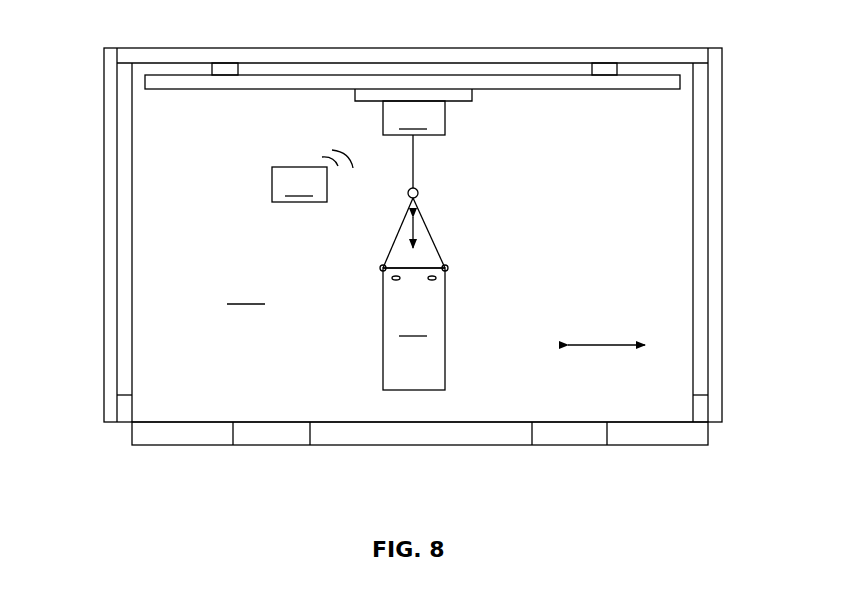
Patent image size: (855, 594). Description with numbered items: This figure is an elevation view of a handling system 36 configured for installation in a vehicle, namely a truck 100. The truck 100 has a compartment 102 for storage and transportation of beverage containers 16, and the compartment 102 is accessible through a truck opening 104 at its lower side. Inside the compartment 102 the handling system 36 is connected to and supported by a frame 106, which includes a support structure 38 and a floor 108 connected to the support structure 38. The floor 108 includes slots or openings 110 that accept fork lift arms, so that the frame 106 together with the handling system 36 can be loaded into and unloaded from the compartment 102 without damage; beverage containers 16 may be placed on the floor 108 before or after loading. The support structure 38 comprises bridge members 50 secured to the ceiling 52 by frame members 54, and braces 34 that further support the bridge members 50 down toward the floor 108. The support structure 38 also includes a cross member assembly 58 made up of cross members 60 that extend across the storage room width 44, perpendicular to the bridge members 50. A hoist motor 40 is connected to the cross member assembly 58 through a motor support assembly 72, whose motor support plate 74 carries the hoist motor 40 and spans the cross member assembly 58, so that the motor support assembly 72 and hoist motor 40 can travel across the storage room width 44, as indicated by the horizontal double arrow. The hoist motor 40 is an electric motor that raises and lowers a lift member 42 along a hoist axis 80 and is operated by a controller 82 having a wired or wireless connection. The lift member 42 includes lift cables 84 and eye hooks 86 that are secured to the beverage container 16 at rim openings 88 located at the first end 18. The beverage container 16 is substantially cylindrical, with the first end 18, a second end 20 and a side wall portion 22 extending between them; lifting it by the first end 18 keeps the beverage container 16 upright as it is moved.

The beverage container 16 is at (414, 329).
The first end 18 is at (445, 266).
The second end 20 is at (440, 392).
The side wall portion 22 is at (445, 354).
The brace 34 is at (693, 207).
The handling system 36 is at (508, 195).
The support structure 38 is at (537, 90).
The hoist motor 40 is at (414, 118).
The lift member 42 is at (416, 172).
The storage room width 44 is at (592, 343).
The bridge member 50 is at (222, 68).
The ceiling 52 is at (300, 47).
The frame member 54 is at (390, 62).
The cross member assembly 58 is at (162, 73).
The cross member 60 is at (607, 84).
The motor support assembly 72 is at (435, 115).
The motor support plate 74 is at (475, 98).
The hoist axis 80 is at (419, 228).
The controller 82 is at (312, 176).
The lift cable 84 is at (409, 166).
The eye hook 86 is at (380, 270).
The rim opening 88 is at (394, 282).
The truck 100 is at (103, 153).
The compartment 102 is at (248, 293).
The truck opening 104 is at (421, 408).
The frame 106 is at (126, 208).
The floor 108 is at (203, 448).
The openings 110 is at (290, 448).